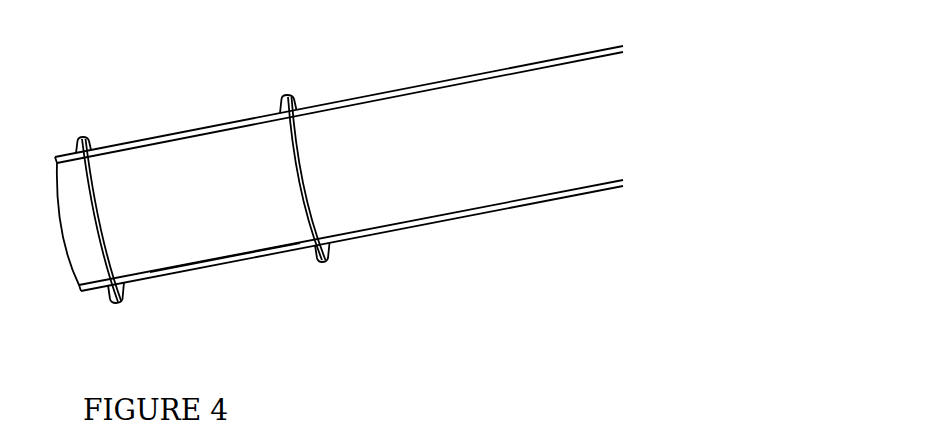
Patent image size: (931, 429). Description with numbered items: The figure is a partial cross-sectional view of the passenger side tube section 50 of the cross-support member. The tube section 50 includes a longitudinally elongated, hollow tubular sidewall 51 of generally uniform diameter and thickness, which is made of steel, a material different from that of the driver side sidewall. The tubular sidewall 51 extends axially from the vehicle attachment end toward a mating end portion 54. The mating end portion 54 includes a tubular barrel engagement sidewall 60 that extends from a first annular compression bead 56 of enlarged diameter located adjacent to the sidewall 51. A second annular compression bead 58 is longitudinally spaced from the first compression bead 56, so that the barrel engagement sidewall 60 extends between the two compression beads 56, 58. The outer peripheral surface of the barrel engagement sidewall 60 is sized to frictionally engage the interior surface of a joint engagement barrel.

The passenger side tube section 50 is at (342, 58).
The tubular sidewall 51 is at (528, 204).
The mating end portion 54 is at (127, 215).
The first annular compression bead 56 is at (329, 260).
The second annular compression bead 58 is at (119, 305).
The barrel engagement sidewall 60 is at (213, 267).